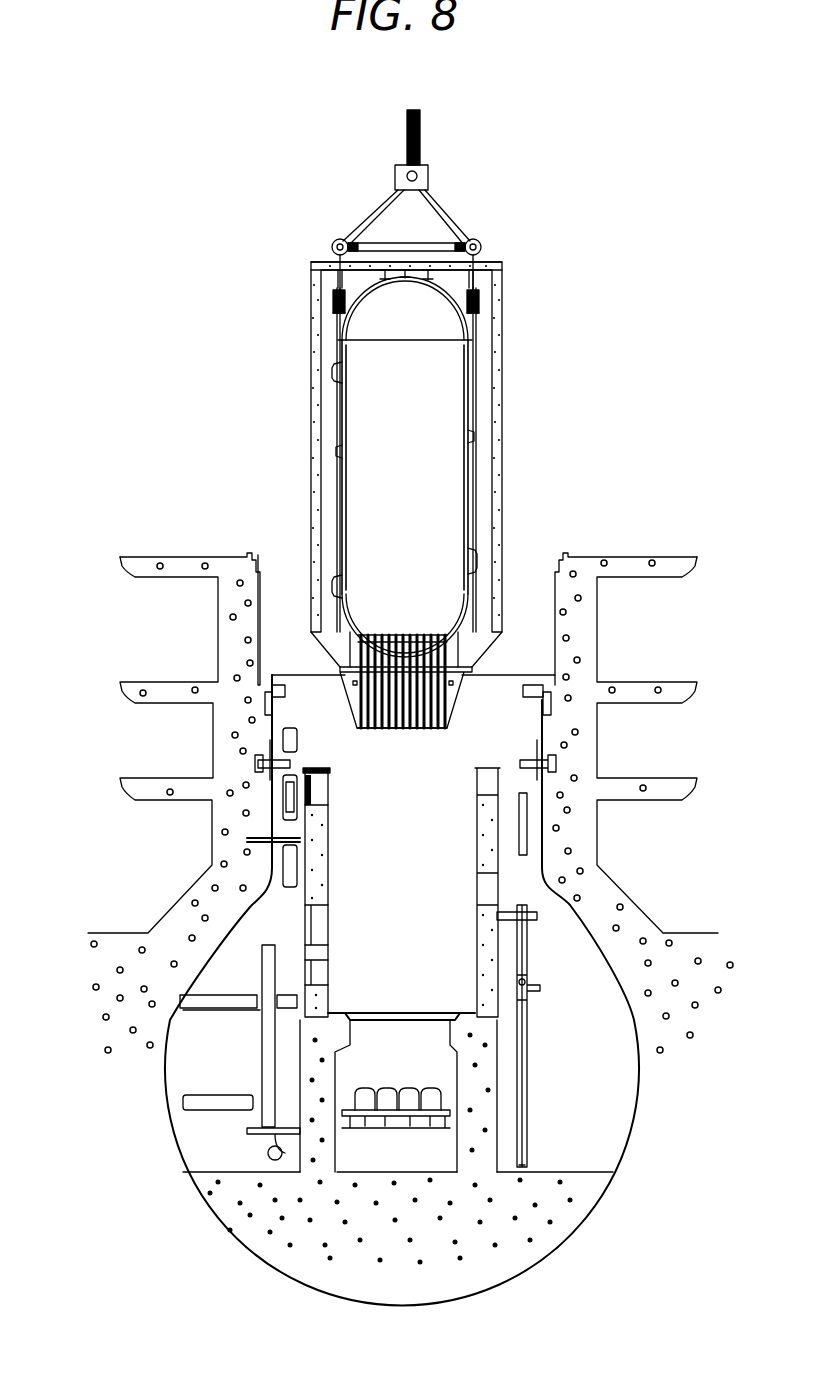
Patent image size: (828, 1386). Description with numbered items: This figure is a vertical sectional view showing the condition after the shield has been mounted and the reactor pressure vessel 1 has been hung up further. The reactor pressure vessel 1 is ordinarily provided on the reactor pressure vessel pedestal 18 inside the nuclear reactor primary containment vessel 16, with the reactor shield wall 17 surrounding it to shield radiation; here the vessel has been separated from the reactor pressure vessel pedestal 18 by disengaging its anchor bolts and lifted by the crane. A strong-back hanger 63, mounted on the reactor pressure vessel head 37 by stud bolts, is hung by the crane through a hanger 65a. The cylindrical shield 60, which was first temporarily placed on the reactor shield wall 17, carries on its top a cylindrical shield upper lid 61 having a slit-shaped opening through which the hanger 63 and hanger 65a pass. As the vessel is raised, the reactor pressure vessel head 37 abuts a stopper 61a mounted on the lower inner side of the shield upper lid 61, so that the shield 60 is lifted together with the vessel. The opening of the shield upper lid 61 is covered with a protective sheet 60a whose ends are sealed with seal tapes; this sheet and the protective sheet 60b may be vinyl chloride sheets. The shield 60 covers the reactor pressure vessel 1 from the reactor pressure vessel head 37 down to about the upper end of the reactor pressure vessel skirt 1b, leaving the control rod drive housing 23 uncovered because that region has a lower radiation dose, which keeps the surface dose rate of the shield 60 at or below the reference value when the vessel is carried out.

The hanger 65a is at (421, 150).
The strong-back hanger 63 is at (460, 217).
The protective sheet 60a is at (503, 262).
The shield upper lid 61 is at (433, 451).
The stopper 61a is at (479, 283).
The reactor pressure vessel head 37 is at (468, 303).
The shield 60 is at (454, 509).
The reactor pressure vessel 1 is at (457, 474).
The reactor pressure vessel skirt 1b is at (458, 650).
The control rod drive housing 23 is at (440, 707).
The protective sheet 60b is at (352, 722).
The reactor shield wall 17 is at (500, 830).
The nuclear reactor primary containment vessel 16 is at (597, 940).
The reactor pressure vessel pedestal 18 is at (300, 1053).